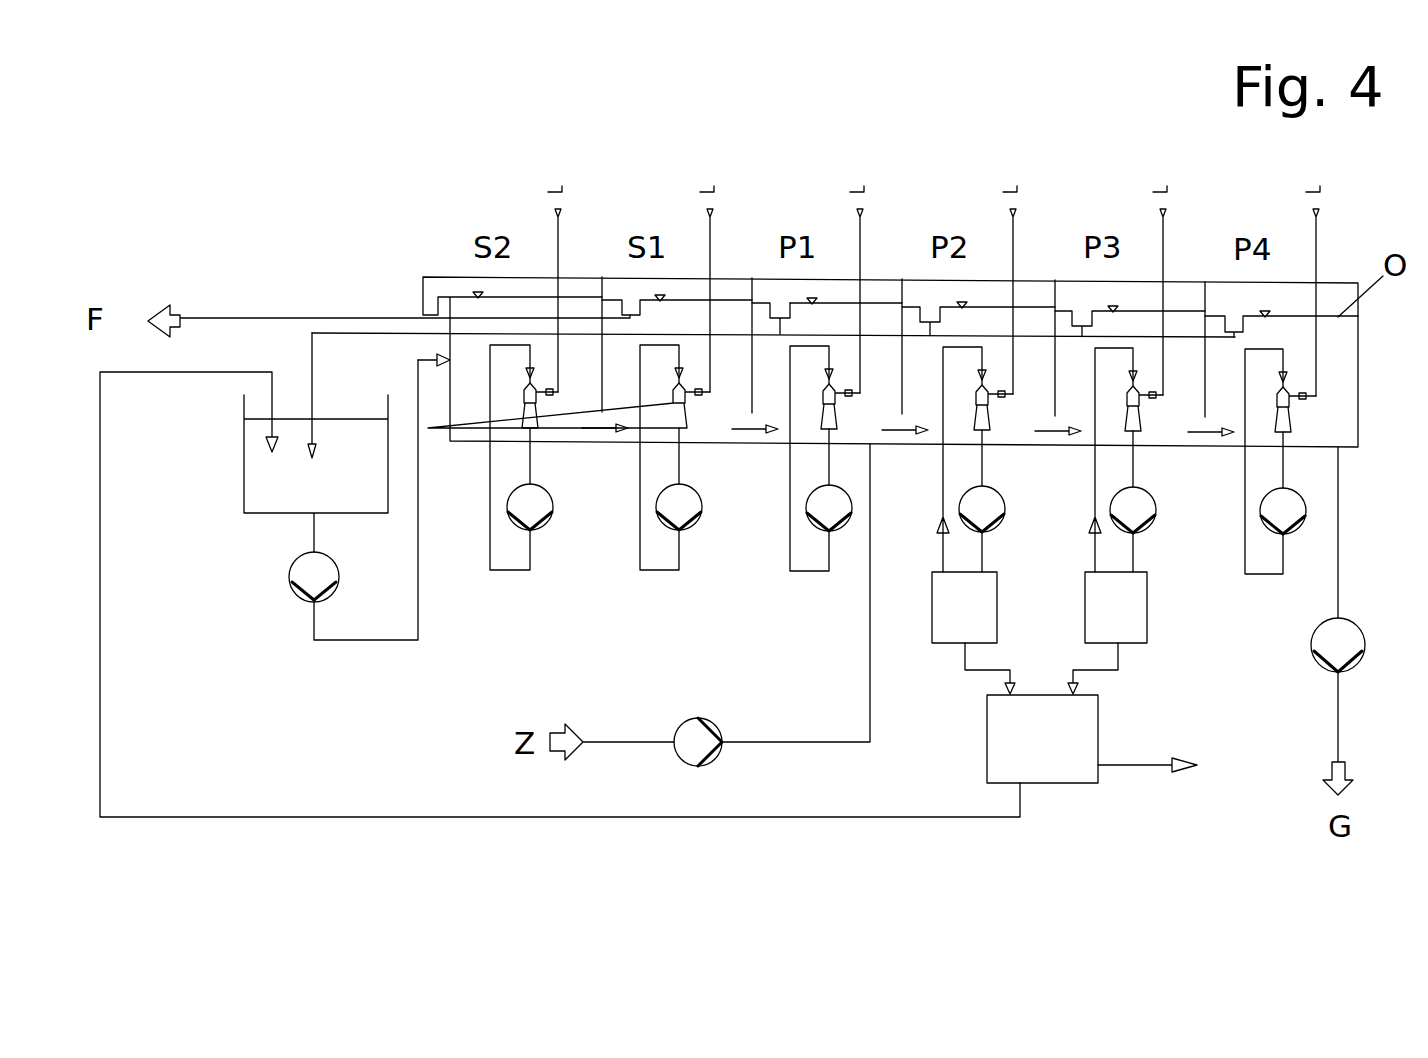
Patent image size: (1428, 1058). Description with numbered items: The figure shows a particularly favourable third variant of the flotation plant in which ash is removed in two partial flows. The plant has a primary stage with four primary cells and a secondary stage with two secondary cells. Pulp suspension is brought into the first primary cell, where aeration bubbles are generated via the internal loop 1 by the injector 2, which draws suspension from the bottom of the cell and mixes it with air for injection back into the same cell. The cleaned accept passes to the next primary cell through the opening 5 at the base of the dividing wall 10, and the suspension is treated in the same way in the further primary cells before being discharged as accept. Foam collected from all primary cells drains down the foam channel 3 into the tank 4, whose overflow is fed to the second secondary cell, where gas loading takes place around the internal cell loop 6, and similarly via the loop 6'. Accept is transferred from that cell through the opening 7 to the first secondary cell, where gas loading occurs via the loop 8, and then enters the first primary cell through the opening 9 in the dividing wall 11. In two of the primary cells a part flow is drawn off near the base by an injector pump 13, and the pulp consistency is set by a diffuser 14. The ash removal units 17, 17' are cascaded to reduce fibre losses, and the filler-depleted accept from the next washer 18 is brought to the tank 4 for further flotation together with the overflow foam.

The internal loop 1 is at (811, 458).
The injector 2 is at (829, 399).
The foam channel 3 is at (846, 317).
The tank 4 is at (331, 500).
The opening 5 is at (890, 348).
The internal cell loop 6 is at (722, 459).
The outlet line of cell P3 6' is at (1099, 460).
The opening 7 is at (589, 347).
The loop 8 is at (569, 457).
The opening 9 is at (741, 348).
The dividing wall 10 is at (903, 311).
The dividing wall 11 is at (750, 293).
The injector pump 13 is at (1006, 516).
The diffuser 14 is at (1000, 446).
The ash removal unit 17 is at (950, 638).
The ash removal unit 17' is at (1138, 641).
The washer 18 is at (1088, 772).